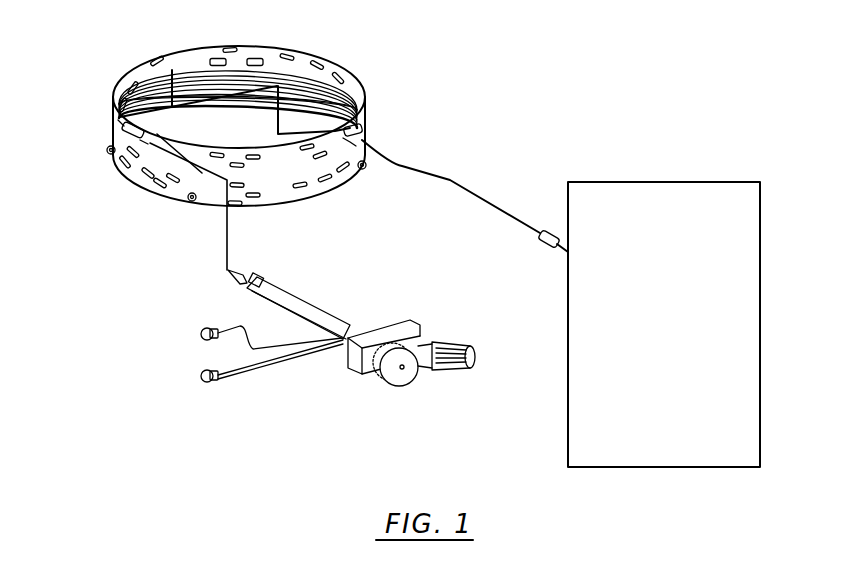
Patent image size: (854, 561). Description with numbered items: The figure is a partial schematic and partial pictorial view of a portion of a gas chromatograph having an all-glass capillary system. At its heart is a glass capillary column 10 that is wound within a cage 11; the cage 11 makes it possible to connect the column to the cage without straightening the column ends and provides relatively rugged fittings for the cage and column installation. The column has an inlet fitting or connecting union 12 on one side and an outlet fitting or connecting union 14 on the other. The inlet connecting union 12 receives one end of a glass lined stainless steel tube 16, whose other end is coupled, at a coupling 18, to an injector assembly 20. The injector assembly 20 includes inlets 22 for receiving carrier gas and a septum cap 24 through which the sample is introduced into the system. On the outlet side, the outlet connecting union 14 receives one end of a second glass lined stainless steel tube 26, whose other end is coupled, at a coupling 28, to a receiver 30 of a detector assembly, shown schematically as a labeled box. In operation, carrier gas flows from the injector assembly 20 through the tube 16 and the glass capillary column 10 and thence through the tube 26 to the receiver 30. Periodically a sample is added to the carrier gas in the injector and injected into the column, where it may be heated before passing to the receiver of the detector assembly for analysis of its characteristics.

The glass capillary column 10 is at (231, 100).
The cage 11 is at (262, 48).
The inlet fitting or connecting union 12 is at (113, 133).
The outlet fitting or connecting union 14 is at (378, 128).
The glass lined stainless steel tube 16 is at (227, 238).
The coupling 18 is at (226, 272).
The injector assembly 20 is at (310, 300).
The inlets 22 is at (205, 368).
The septum cap 24 is at (392, 378).
The glass lined stainless steel tube 26 is at (493, 203).
The coupling 28 is at (540, 243).
The receiver 30 is at (706, 182).